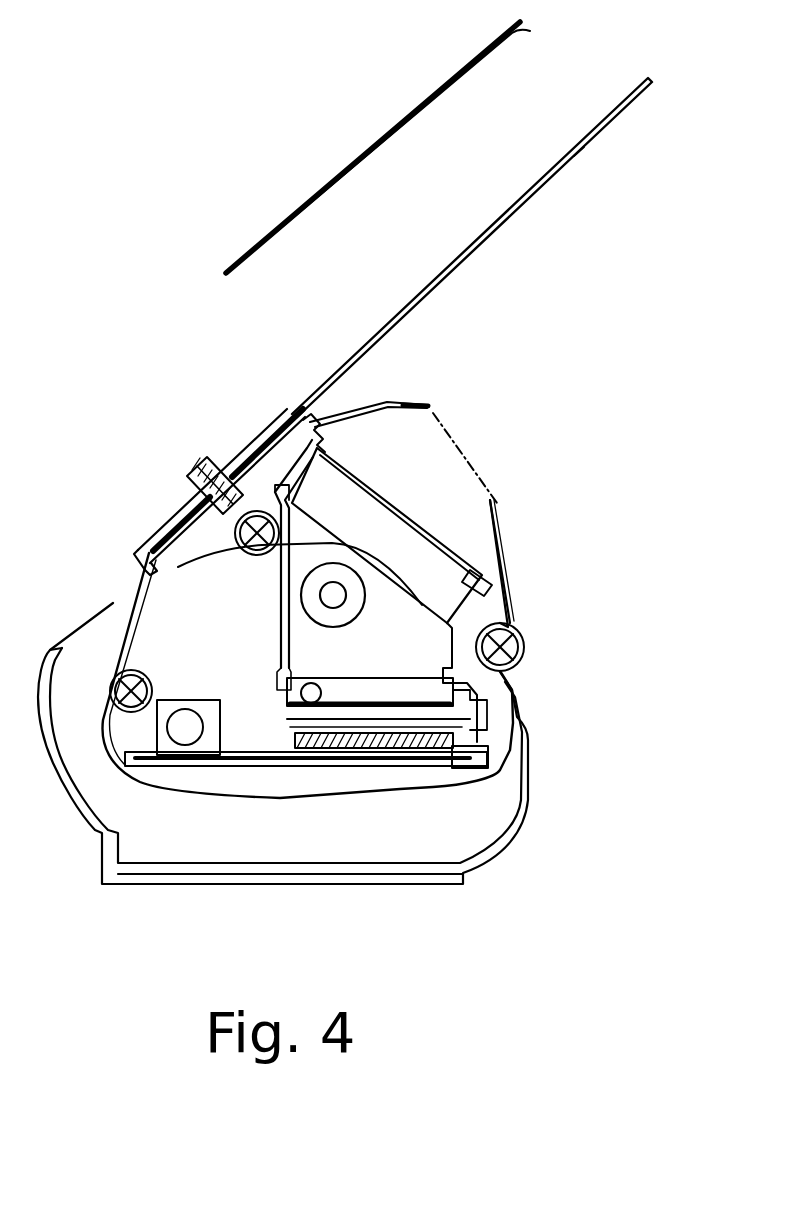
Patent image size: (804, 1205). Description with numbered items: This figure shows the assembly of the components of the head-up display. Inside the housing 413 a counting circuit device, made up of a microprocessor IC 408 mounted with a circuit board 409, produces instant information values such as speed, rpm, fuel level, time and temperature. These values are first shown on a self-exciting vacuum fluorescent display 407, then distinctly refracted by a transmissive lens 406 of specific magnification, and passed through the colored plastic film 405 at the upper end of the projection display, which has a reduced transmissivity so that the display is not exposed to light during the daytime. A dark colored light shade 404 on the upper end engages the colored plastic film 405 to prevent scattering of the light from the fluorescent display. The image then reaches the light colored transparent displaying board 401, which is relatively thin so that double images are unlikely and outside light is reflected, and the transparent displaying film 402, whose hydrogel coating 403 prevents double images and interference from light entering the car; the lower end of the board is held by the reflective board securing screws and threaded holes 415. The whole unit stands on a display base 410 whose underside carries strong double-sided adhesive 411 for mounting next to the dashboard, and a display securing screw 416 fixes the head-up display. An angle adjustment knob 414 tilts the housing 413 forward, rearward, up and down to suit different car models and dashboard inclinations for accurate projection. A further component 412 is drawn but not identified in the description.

The transparent displaying board 401 is at (477, 247).
The transparent displaying film 402 is at (361, 160).
The hydrogel coating 403 is at (278, 231).
The light shade 404 is at (437, 452).
The colored plastic film 405 is at (405, 507).
The transmissive lens 406 is at (427, 557).
The vacuum fluorescent display 407 is at (360, 695).
The microprocessor IC 408 is at (410, 745).
The circuit board 409 is at (323, 762).
The display base 410 is at (238, 847).
The double-sided adhesive 411 is at (137, 887).
The motor 412 is at (187, 727).
The housing 413 is at (163, 620).
The angle adjustment knob 414 is at (333, 596).
The reflective board securing screws and threaded holes 415 is at (202, 492).
The display securing screw 416 is at (150, 687).